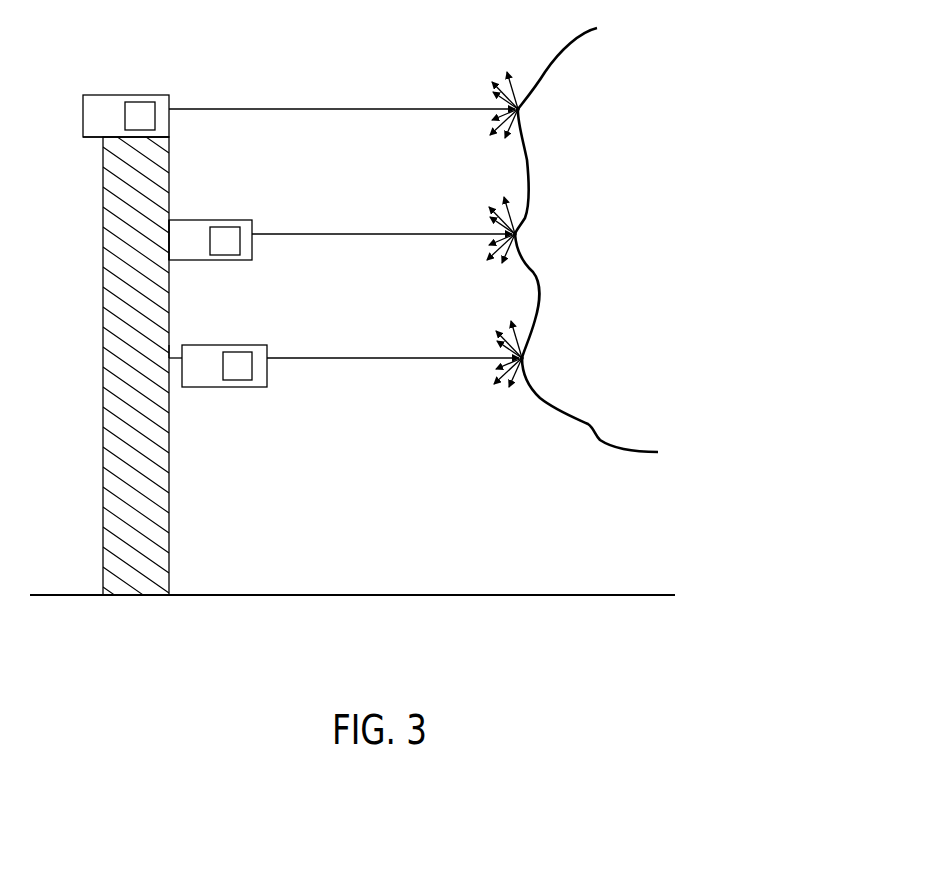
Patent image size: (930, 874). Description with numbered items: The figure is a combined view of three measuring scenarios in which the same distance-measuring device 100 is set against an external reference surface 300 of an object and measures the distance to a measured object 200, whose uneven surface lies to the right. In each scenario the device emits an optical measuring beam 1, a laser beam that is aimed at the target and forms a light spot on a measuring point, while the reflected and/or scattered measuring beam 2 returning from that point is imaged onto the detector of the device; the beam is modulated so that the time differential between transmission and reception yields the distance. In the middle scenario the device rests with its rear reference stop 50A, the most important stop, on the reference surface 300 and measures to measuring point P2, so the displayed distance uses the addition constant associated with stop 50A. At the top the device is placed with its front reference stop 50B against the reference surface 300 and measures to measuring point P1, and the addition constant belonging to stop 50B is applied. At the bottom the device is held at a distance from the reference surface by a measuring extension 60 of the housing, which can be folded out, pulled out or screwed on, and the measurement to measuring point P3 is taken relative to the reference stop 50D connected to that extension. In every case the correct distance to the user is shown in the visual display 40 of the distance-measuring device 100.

The optical measuring beam 1 is at (355, 108).
The reflected and/or scattered measuring beam 2 is at (510, 128).
The visual display 40 is at (140, 101).
The rear reference stop 50A is at (171, 233).
The front reference stop 50B is at (170, 122).
The reference stop 50D is at (171, 350).
The measuring extension 60 is at (178, 364).
The distance-measuring device 100 is at (103, 92).
The measured object 200 is at (656, 240).
The external reference surface 300 is at (168, 600).
The measuring point P1 is at (520, 106).
The measuring point P2 is at (517, 231).
The measuring point P3 is at (524, 355).